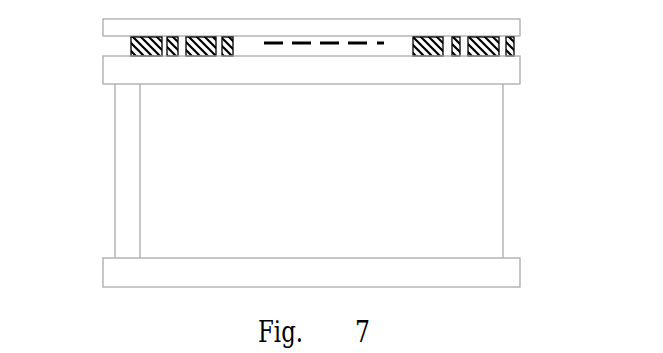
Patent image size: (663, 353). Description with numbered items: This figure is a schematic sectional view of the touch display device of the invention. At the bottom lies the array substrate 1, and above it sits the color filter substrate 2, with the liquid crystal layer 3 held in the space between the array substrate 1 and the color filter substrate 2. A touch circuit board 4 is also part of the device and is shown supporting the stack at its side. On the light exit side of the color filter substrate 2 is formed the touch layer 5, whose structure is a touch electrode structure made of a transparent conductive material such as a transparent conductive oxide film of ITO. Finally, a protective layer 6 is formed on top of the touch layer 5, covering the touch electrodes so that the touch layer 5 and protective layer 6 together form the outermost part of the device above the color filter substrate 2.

The array substrate 1 is at (520, 269).
The color filter substrate 2 is at (520, 76).
The liquid crystal layer 3 is at (482, 176).
The touch circuit board 4 is at (122, 176).
The touch layer 5 is at (131, 49).
The protective layer 6 is at (520, 28).